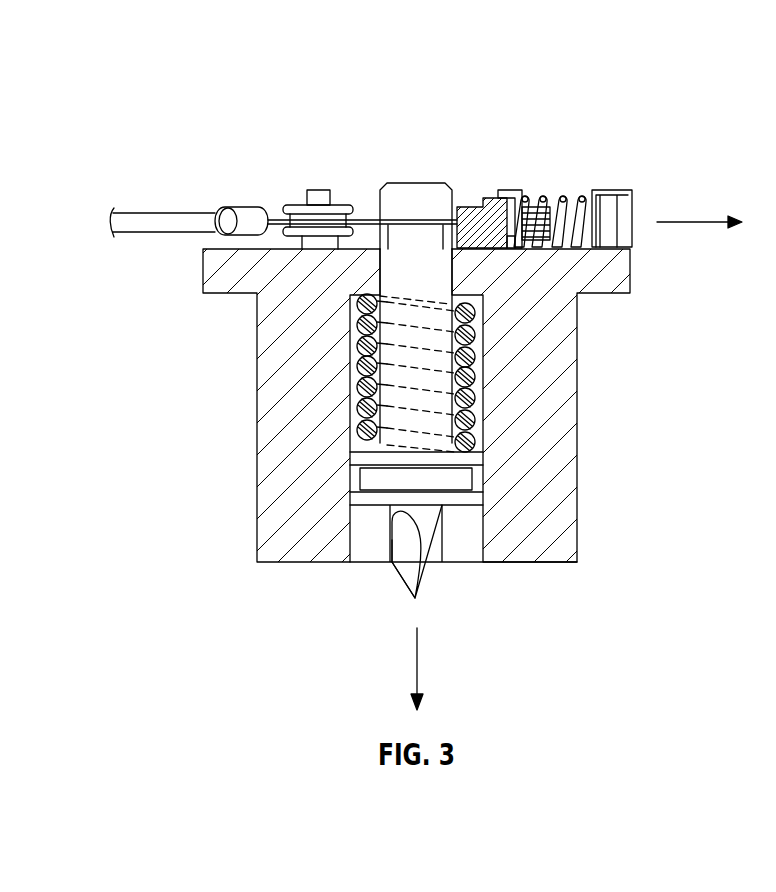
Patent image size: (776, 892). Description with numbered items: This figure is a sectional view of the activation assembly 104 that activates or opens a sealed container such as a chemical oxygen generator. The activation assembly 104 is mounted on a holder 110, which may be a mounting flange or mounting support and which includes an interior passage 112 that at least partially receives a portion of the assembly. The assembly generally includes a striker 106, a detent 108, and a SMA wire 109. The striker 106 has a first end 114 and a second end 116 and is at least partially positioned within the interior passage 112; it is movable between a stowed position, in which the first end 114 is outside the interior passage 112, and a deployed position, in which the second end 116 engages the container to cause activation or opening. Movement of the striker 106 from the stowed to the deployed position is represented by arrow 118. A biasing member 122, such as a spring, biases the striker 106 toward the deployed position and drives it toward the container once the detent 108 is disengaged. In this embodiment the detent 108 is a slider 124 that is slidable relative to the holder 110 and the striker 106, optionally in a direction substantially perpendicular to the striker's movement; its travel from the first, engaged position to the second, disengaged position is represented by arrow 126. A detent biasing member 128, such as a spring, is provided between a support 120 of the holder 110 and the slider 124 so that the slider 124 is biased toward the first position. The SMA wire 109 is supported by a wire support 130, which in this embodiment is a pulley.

The activation assembly 104 is at (187, 152).
The striker 106 is at (412, 575).
The detent 108 is at (493, 200).
The SMA wire 109 is at (372, 205).
The holder 110 is at (568, 417).
The interior passage 112 is at (473, 548).
The first end 114 is at (413, 198).
The second end 116 is at (418, 597).
The arrow 118 is at (418, 655).
The support 120 is at (622, 220).
The biasing member 122 is at (360, 410).
The slider 124 is at (515, 202).
The arrow 126 is at (700, 222).
The detent biasing member 128 is at (580, 197).
The wire support 130 is at (300, 206).